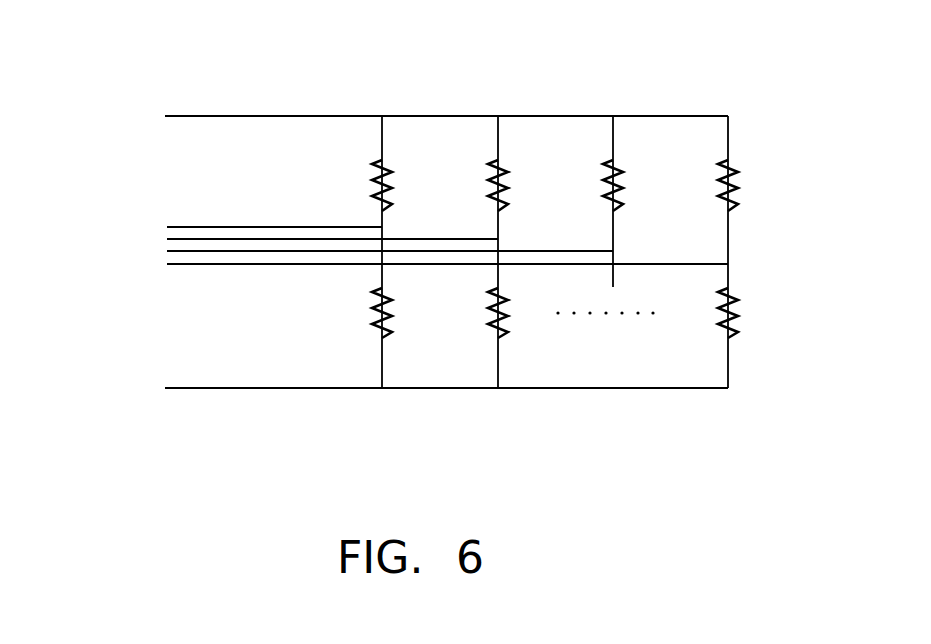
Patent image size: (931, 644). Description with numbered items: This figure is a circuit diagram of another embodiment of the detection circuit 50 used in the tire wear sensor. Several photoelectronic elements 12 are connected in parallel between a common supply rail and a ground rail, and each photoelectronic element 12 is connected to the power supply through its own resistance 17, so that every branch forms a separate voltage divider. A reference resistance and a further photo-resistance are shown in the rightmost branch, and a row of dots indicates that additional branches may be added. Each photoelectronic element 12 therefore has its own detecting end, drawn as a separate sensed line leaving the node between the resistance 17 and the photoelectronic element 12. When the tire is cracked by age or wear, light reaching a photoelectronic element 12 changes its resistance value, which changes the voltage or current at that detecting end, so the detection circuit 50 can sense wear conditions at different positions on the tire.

The detection circuit 50 is at (50, 93).
The resistance 17 is at (388, 187).
The photoelectronic element 12 is at (489, 322).